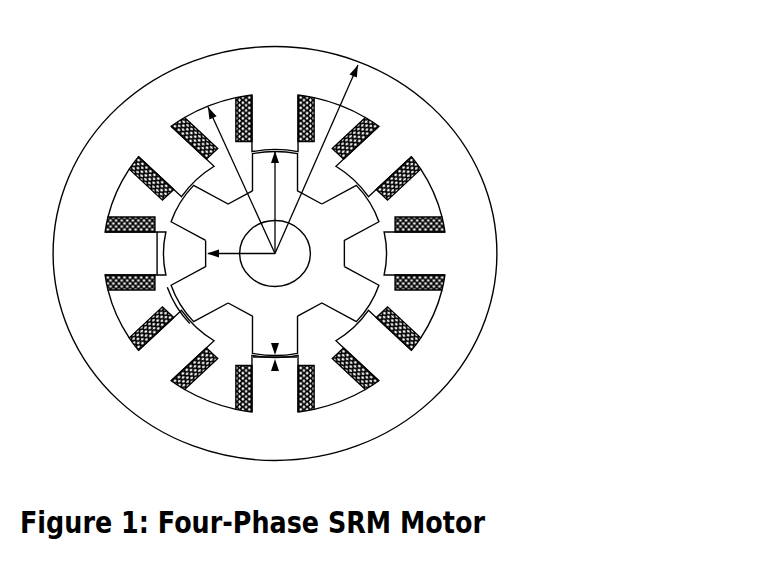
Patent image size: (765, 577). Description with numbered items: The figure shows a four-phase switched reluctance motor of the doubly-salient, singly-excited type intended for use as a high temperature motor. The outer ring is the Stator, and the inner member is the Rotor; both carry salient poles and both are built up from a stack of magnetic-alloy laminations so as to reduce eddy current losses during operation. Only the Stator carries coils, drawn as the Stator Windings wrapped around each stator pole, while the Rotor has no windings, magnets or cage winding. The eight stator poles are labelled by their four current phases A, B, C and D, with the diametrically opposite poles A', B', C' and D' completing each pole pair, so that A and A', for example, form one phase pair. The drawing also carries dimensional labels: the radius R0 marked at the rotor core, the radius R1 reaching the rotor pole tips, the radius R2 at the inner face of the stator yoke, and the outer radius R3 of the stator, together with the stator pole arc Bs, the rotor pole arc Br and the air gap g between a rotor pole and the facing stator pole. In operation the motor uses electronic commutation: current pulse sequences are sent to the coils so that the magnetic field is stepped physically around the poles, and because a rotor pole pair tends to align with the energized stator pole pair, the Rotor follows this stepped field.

The stator pole of phase A is at (275, 113).
The stator pole of phase B is at (373, 162).
The stator pole of phase C is at (423, 253).
The stator pole of phase D is at (374, 350).
The opposite stator pole of phase A A' is at (275, 398).
The opposite stator pole of phase B B' is at (176, 346).
The opposite stator pole of phase C C' is at (124, 253).
The opposite stator pole of phase D D' is at (176, 162).
The rotor core radius R0 is at (241, 263).
The rotor outer / stator bore radius R1 is at (266, 202).
The stator yoke inner radius R2 is at (241, 178).
The stator outer radius R3 is at (325, 159).
The stator pole arc Bs is at (147, 253).
The rotor pole arc Br is at (181, 305).
The air gap g is at (275, 356).
The rotor Rotor is at (352, 208).
The stator Stator is at (482, 262).
The stator windings Stator Windings is at (412, 333).